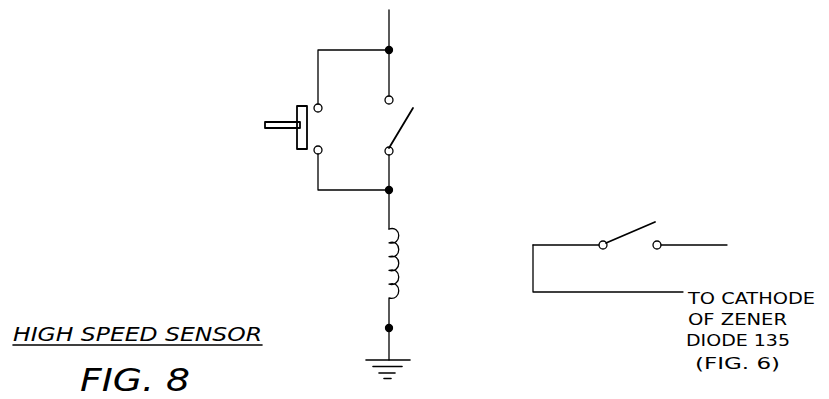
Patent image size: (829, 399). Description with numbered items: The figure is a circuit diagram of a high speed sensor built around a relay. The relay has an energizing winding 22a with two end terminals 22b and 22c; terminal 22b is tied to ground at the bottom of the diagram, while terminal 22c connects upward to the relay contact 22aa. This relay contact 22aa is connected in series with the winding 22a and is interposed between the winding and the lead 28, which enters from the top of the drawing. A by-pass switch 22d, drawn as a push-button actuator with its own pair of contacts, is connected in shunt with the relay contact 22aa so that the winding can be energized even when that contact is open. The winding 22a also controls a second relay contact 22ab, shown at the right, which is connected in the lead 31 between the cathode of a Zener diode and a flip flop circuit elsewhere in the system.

The lead 28 is at (390, 31).
The by-pass switch 22d is at (278, 119).
The relay contact 22aa is at (401, 126).
The end terminal 22c is at (392, 192).
The energizing winding 22a is at (384, 239).
The end terminal 22b is at (393, 326).
The relay contact 22ab is at (633, 217).
The lead 31 is at (719, 222).